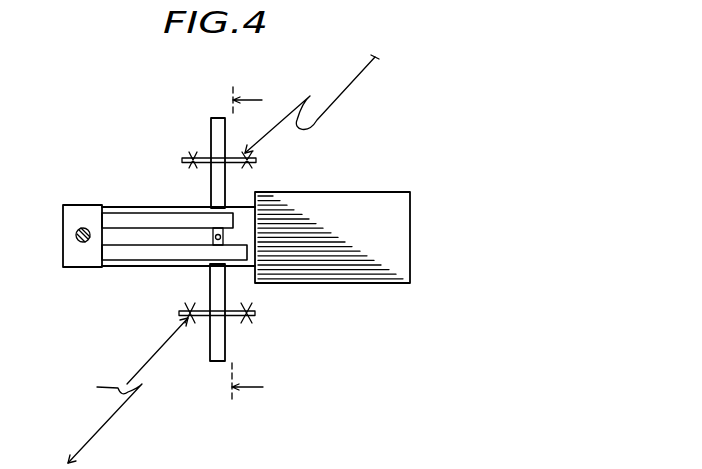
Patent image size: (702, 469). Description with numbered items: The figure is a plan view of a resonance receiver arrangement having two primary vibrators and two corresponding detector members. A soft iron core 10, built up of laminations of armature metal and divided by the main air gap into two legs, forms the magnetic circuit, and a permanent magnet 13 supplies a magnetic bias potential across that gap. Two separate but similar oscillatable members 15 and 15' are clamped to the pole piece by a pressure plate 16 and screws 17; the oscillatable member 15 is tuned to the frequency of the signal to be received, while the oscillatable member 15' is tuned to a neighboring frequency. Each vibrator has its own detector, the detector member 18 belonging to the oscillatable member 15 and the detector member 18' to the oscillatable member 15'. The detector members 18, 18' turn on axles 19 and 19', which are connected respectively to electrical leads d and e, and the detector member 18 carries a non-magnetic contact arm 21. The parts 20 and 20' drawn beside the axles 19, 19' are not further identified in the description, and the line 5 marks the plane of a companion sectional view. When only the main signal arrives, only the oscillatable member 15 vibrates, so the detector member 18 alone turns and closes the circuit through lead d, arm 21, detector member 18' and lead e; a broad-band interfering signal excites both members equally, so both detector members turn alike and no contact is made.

The soft iron core 10 is at (375, 200).
The permanent magnet 13 is at (119, 207).
The oscillatable member 15 is at (174, 274).
The oscillatable member 15' is at (167, 202).
The pressure plate 16 is at (72, 268).
The screws 17 is at (76, 236).
The detector member 18 is at (196, 317).
The detector member 18' is at (195, 163).
The axle 19 is at (230, 324).
The axle 19' is at (243, 152).
The lower cross bar marks 20 is at (235, 307).
The upper cross bar marks 20' is at (243, 166).
The contact arm 21 is at (211, 240).
The section line 5 is at (257, 245).
The electrical lead d is at (128, 390).
The electrical lead e is at (358, 75).